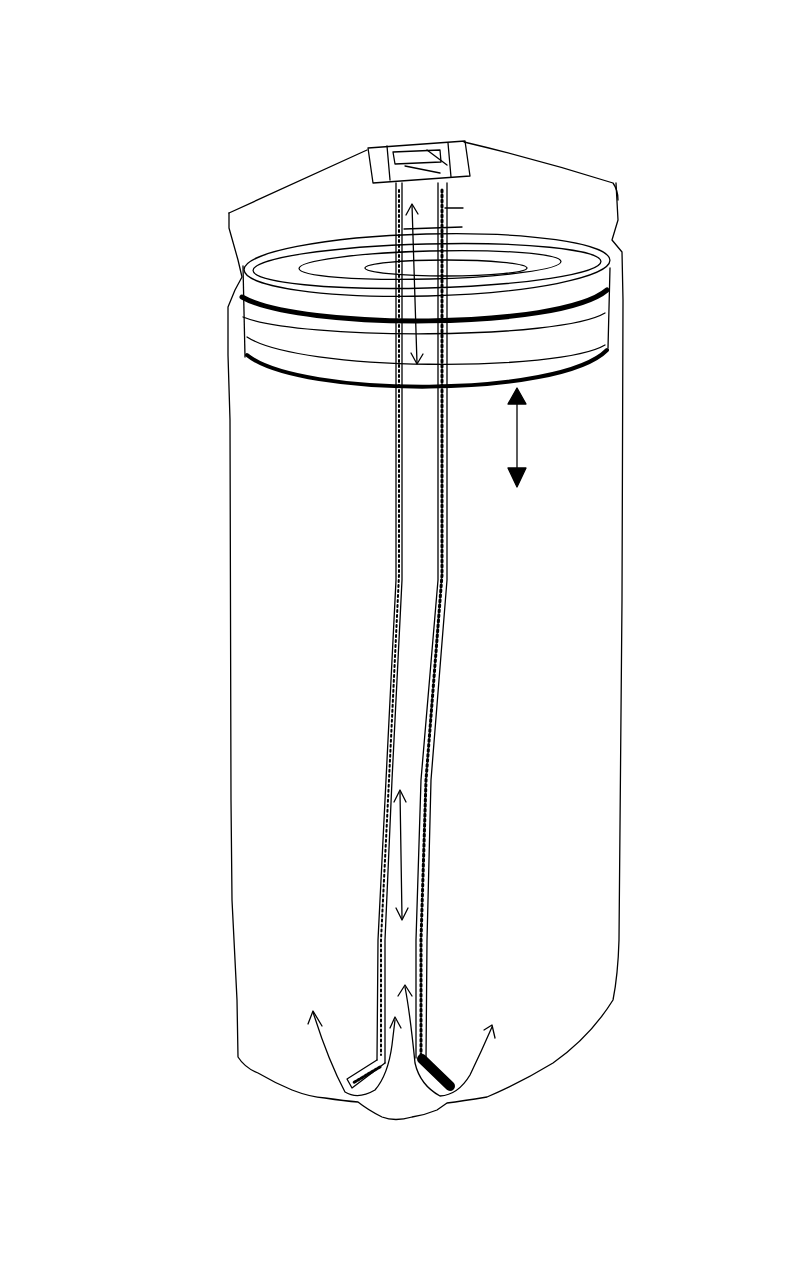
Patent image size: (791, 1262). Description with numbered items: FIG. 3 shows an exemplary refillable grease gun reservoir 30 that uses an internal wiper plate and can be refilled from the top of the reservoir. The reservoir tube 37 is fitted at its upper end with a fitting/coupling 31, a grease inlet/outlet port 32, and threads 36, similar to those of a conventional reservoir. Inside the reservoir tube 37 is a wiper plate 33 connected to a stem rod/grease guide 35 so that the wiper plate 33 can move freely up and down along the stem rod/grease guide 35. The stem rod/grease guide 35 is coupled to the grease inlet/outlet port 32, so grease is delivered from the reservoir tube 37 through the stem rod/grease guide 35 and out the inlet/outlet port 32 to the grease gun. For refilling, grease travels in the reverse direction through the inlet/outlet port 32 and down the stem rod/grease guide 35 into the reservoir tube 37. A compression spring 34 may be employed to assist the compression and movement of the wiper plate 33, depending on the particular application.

The grease dispensing assembly 30 is at (393, 594).
The fitting/coupling 31 is at (375, 137).
The grease inlet/outlet port 32 is at (415, 142).
The wiper plate 33 is at (582, 327).
The compression spring 34 is at (388, 215).
The stem rod/grease guide 35 is at (447, 570).
The threads 36 is at (226, 307).
The reservoir tube 37 is at (226, 915).